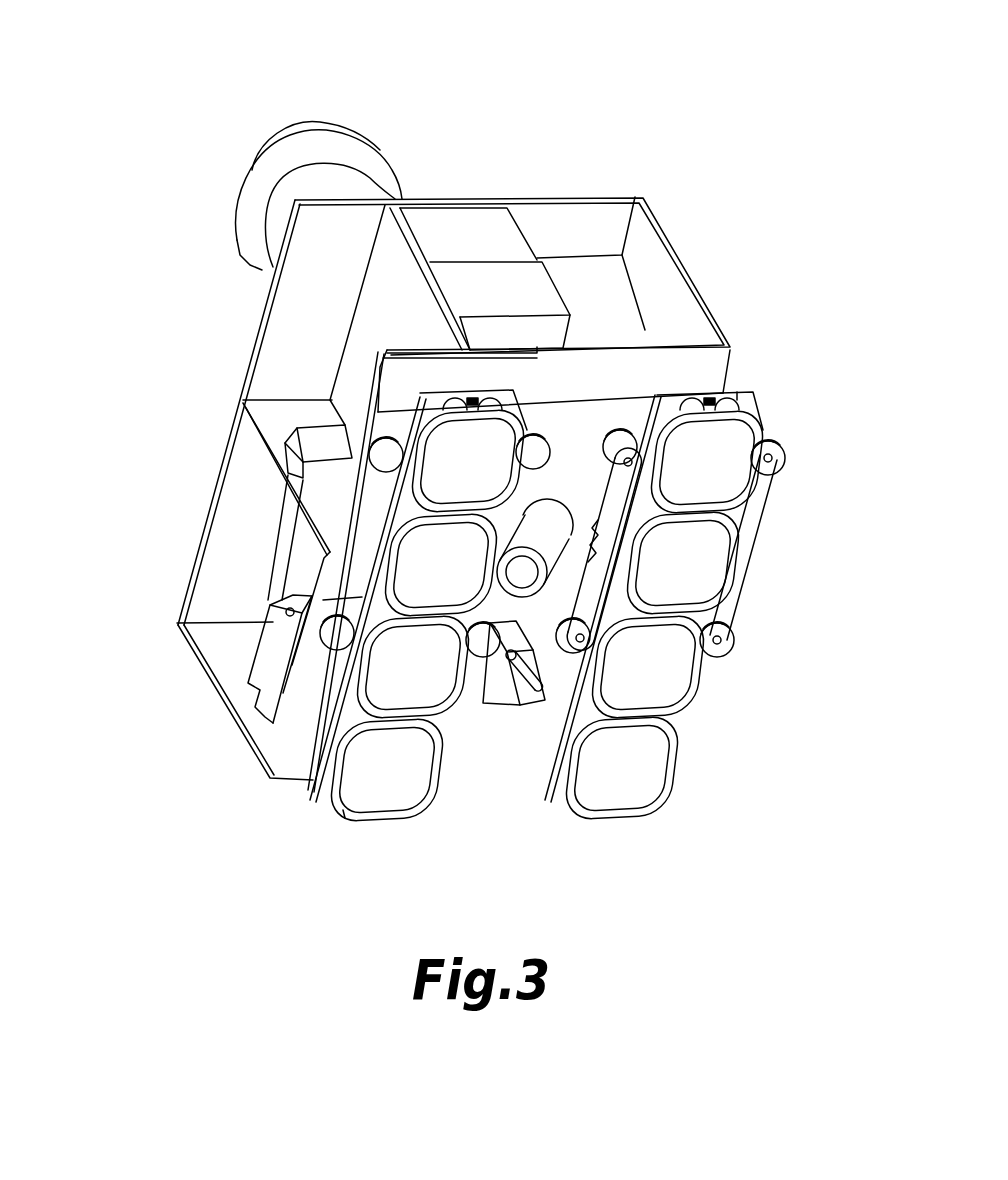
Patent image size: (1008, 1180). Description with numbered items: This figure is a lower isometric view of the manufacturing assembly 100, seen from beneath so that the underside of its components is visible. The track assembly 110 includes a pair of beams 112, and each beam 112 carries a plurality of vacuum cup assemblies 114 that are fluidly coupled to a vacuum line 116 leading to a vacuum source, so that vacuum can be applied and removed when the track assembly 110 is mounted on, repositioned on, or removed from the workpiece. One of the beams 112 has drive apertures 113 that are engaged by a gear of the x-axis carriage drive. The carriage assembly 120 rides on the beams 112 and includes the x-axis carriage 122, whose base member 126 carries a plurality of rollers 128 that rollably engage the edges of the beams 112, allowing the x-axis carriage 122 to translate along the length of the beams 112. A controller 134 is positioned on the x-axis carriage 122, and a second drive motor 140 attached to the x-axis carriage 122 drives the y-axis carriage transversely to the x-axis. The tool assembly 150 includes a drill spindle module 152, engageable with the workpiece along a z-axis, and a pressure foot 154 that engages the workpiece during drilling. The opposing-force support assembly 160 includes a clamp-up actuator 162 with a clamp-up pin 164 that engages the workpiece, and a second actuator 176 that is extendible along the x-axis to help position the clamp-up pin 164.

The manufacturing assembly 100 is at (718, 124).
The track assembly 110 is at (162, 826).
The beam 112 is at (747, 392).
The drive aperture 113 is at (443, 398).
The vacuum cup assembly 114 is at (347, 678).
The vacuum line 116 is at (737, 390).
The carriage assembly 120 is at (799, 278).
The x-axis carriage 122 is at (203, 553).
The base member 126 is at (600, 400).
The roller 128 is at (385, 462).
The controller 134 is at (473, 225).
The second drive motor 140 is at (293, 450).
The tool assembly 150 is at (265, 88).
The drill spindle module 152 is at (370, 142).
The pressure foot 154 is at (555, 580).
The opposing-force support assembly 160 is at (147, 677).
The clamp-up actuator 162 is at (508, 700).
The clamp-up pin 164 is at (530, 692).
The second actuator 176 is at (260, 670).